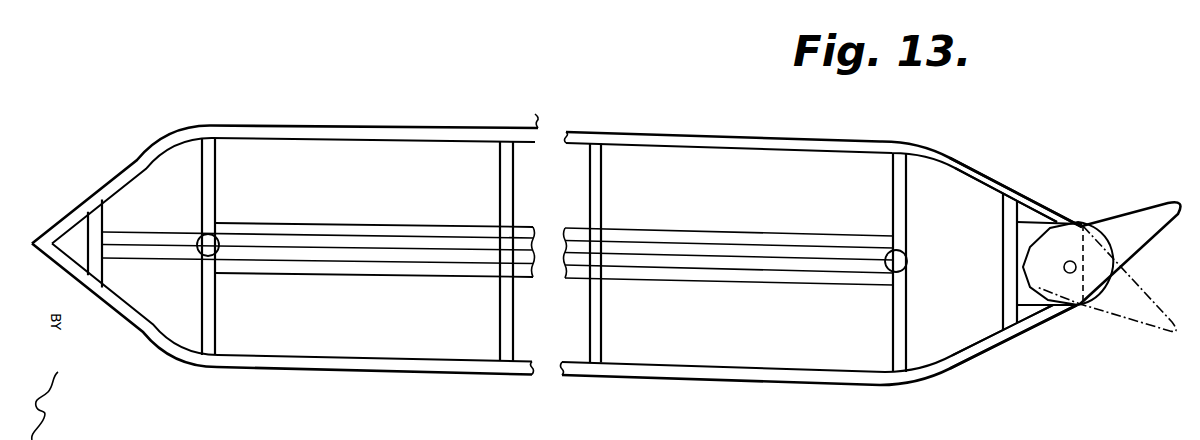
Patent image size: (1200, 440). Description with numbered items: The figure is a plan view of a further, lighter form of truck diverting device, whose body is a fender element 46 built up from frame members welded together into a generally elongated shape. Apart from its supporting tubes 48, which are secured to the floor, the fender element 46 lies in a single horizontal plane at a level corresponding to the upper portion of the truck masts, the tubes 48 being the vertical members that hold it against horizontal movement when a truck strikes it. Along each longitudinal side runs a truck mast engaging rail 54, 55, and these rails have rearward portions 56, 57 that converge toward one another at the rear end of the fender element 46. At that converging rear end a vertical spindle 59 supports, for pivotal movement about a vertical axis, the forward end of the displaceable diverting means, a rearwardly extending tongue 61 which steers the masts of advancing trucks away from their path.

The fender element 46 is at (551, 128).
The vertically extending tubes 48 is at (201, 236).
The truck mast engaging rail 54 is at (716, 372).
The truck mast engaging rail 55 is at (654, 139).
The rearward portion 56 is at (970, 357).
The rearward portion 57 is at (983, 174).
The vertical spindle 59 is at (1073, 275).
The truck diverting means 61 is at (1156, 193).